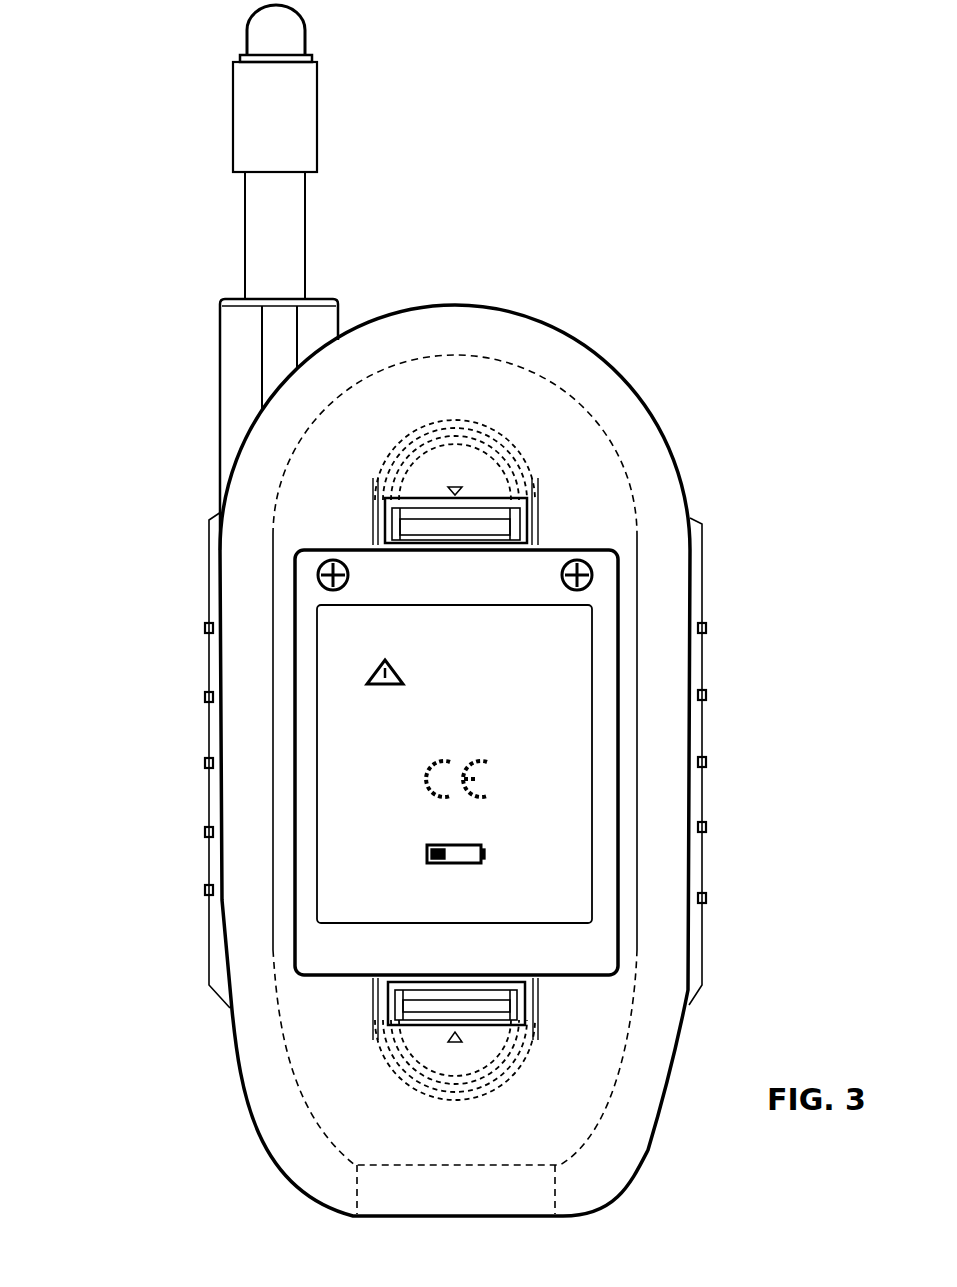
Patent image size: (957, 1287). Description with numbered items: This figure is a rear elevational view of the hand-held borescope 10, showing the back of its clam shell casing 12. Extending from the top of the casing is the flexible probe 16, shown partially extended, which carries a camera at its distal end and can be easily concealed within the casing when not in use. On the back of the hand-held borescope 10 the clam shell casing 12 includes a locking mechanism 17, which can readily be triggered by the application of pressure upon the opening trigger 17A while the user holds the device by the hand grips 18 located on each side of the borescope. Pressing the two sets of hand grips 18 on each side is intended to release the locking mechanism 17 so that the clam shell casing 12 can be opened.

The hand-held borescope 10 is at (727, 381).
The clam shell casing 12 is at (512, 337).
The flexible probe 16 is at (297, 123).
The locking mechanism 17 is at (493, 525).
The opening trigger 17A is at (482, 477).
The hand grips 18 is at (203, 890).